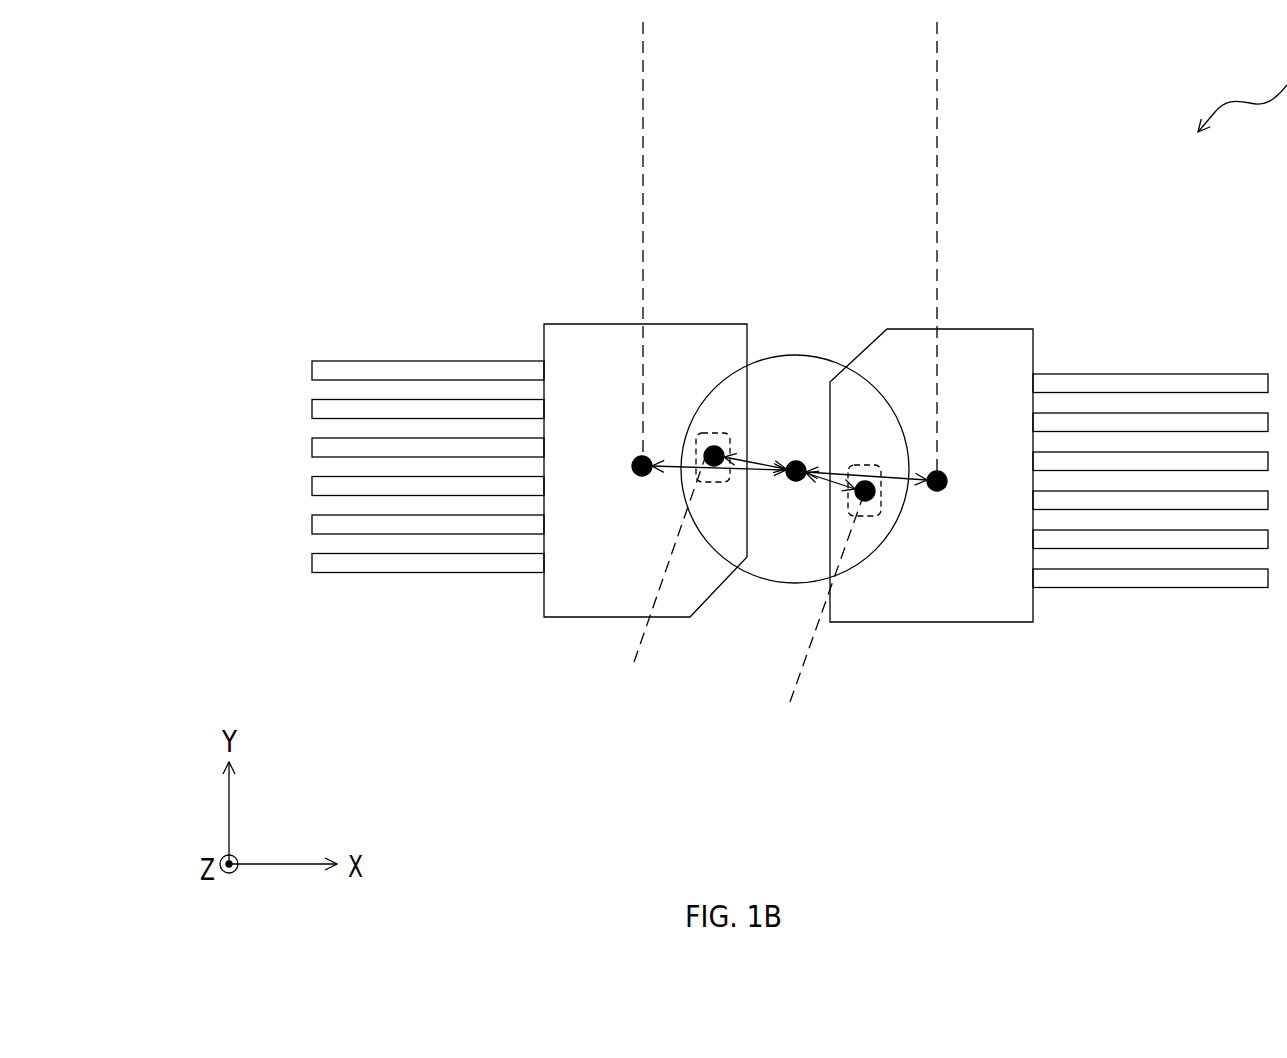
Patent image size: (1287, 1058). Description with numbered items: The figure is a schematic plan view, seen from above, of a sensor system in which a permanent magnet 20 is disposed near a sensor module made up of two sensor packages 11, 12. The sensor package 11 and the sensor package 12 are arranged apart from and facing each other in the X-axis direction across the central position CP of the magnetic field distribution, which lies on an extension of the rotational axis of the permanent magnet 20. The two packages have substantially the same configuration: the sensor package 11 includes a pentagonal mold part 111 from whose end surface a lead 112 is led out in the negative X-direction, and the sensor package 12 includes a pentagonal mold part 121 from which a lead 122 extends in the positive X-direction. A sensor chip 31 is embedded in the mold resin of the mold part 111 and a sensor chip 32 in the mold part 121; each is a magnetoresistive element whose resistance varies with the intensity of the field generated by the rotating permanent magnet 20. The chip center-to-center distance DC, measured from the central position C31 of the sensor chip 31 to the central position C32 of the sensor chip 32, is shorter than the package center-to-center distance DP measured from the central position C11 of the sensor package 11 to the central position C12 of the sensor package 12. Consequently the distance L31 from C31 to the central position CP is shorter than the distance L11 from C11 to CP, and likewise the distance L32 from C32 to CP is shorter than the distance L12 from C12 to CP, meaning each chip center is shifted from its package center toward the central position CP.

The sensor package 11 is at (498, 312).
The sensor package 12 is at (1097, 313).
The mold part 111 is at (552, 590).
The lead 112 is at (339, 565).
The mold part 121 is at (988, 577).
The lead 122 is at (1200, 577).
The permanent magnet 20 is at (713, 388).
The sensor chip 31 is at (696, 443).
The sensor chip 32 is at (863, 515).
The central position of the sensor package C11 is at (642, 466).
The central position of the sensor package C12 is at (937, 471).
The central position of the sensor chip C31 is at (714, 456).
The central position of the sensor chip C32 is at (864, 465).
The central position of the distribution of the magnetic field CP is at (796, 481).
The distance L11 is at (655, 468).
The distance L12 is at (893, 485).
The distance L31 is at (758, 460).
The distance L32 is at (838, 477).
The package center-to-center distance DP is at (937, 60).
The chip center-to-center distance DC is at (792, 688).